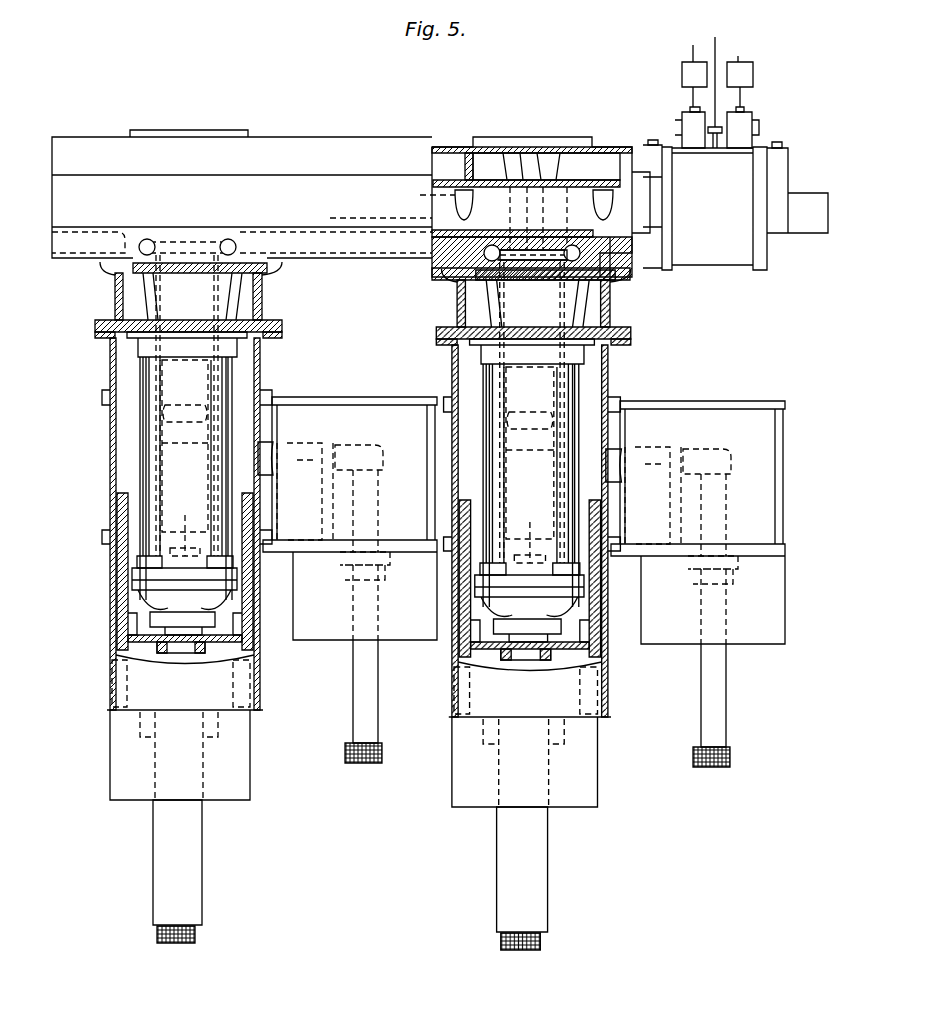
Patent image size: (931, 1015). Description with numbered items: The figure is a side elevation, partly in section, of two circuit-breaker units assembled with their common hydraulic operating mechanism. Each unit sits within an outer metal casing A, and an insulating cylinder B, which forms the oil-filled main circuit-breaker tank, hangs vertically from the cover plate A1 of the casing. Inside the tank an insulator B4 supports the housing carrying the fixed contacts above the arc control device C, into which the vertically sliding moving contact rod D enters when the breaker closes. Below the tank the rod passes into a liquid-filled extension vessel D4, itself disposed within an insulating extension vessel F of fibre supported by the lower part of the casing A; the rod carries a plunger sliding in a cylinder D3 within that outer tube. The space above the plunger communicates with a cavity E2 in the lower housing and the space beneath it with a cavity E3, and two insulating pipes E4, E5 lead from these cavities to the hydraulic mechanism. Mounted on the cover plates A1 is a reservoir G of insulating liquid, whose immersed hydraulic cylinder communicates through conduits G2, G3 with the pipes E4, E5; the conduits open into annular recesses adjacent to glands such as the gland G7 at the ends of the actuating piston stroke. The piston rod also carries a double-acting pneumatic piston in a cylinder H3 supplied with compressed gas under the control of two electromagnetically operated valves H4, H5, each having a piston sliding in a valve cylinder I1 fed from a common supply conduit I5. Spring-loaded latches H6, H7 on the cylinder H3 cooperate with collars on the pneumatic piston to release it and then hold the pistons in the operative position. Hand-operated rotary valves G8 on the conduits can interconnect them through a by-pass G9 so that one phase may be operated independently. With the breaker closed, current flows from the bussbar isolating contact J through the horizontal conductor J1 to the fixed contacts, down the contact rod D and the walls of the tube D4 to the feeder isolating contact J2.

The reservoir G is at (290, 137).
The conduit G2 is at (632, 268).
The conduit G3 is at (478, 252).
The gland G7 is at (480, 205).
The rotary valve G8 is at (222, 240).
The by-pass G9 is at (200, 258).
The pneumatic cylinder H3 is at (722, 255).
The electromagnetically operated valve H4 is at (682, 70).
The electromagnetically operated valve H5 is at (752, 72).
The spring-loaded latch H6 is at (656, 140).
The spring-loaded latch H7 is at (780, 142).
The valve cylinder I1 is at (684, 118).
The common supply conduit I5 is at (710, 77).
The outer metal casing A is at (110, 364).
The cover plate A1 is at (283, 326).
The insulating cylinder B is at (232, 378).
The insulator B4 is at (150, 388).
The arc control device C is at (170, 470).
The moving contact rod D is at (358, 528).
The cylinder D3 is at (188, 655).
The extension vessel / outer tube D4 is at (175, 640).
The cavity E2 is at (243, 600).
The cavity E3 is at (147, 612).
The pipe E4 is at (215, 410).
The pipe E5 is at (150, 445).
The extension vessel F is at (195, 847).
The bussbar isolating contact J is at (382, 762).
The horizontal conductor J1 is at (263, 455).
The feeder isolating contact J2 is at (197, 932).